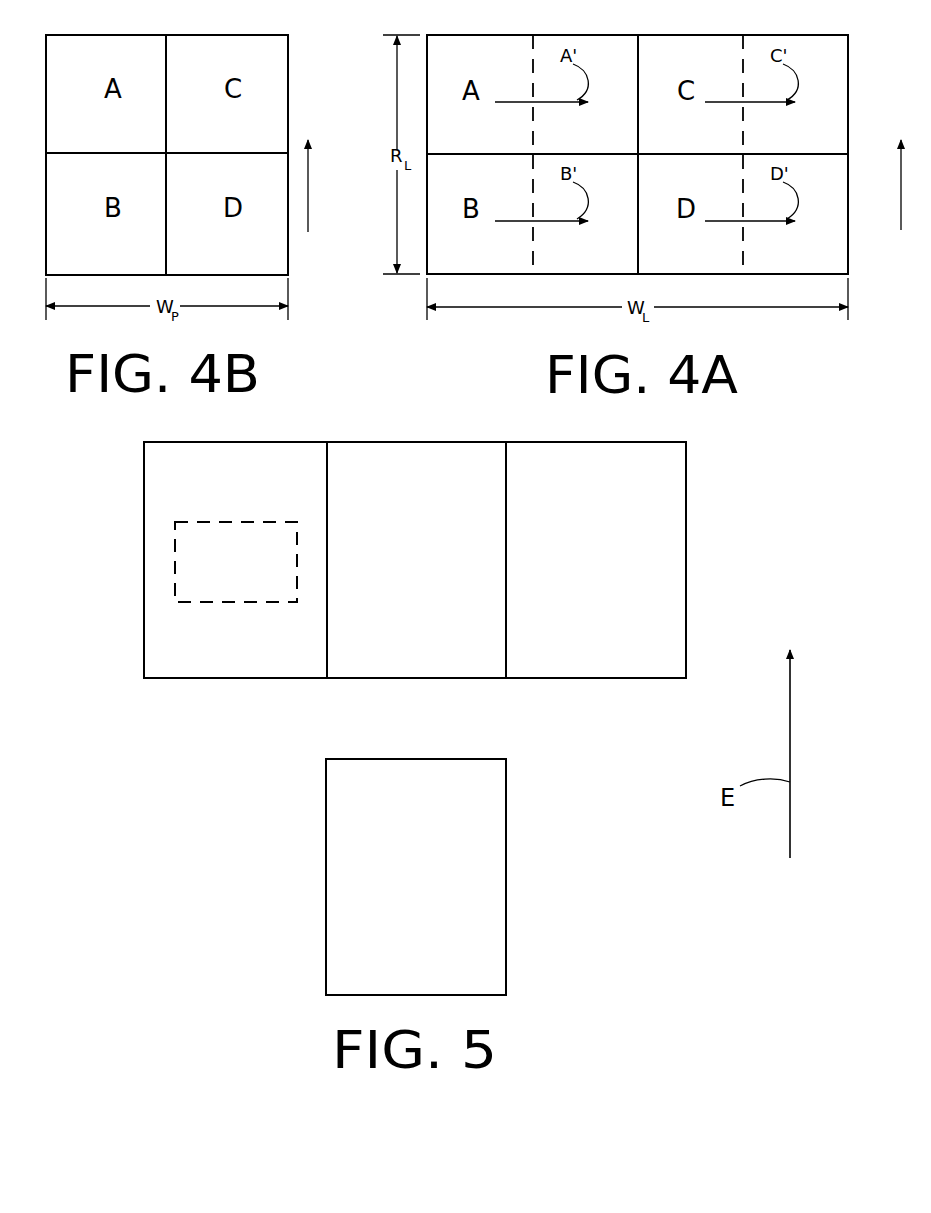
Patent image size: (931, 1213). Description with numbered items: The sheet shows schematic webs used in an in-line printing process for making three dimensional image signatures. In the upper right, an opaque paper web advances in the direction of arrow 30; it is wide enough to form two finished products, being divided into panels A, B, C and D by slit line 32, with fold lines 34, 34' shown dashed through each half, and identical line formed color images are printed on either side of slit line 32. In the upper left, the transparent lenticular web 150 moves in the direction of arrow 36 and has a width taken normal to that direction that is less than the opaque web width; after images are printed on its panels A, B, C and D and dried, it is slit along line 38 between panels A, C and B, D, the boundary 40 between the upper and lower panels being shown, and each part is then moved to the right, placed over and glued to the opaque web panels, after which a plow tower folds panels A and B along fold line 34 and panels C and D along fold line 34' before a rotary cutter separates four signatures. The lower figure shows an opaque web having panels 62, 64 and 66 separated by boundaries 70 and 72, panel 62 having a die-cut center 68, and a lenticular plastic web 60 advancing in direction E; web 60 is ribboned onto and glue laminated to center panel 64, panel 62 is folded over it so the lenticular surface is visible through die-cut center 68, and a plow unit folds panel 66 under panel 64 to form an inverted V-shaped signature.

In FIG. 4B, the page image divided into quadrants 150 is at (288, 70).
In FIG. 4B, the slit line 38 is at (166, 140).
In FIG. 4B, the horizontal dividing line 40 is at (232, 153).
In FIG. 4B, the arrow 36 is at (308, 205).
In FIG. 4A, the arrow 30 is at (901, 183).
In FIG. 4A, the slit line 32 is at (638, 184).
In FIG. 4A, the fold line 34 is at (565, 154).
In FIG. 4A, the fold line 34' is at (777, 154).
In FIG. 5, the panel 62 is at (207, 680).
In FIG. 5, the center panel 64 is at (460, 680).
In FIG. 5, the panel 66 is at (686, 585).
In FIG. 5, the die-cut center 68 is at (213, 520).
In FIG. 5, the first panel boundary 70 is at (327, 645).
In FIG. 5, the second panel boundary 72 is at (506, 607).
In FIG. 5, the web of lenticular plastic material 60 is at (506, 915).